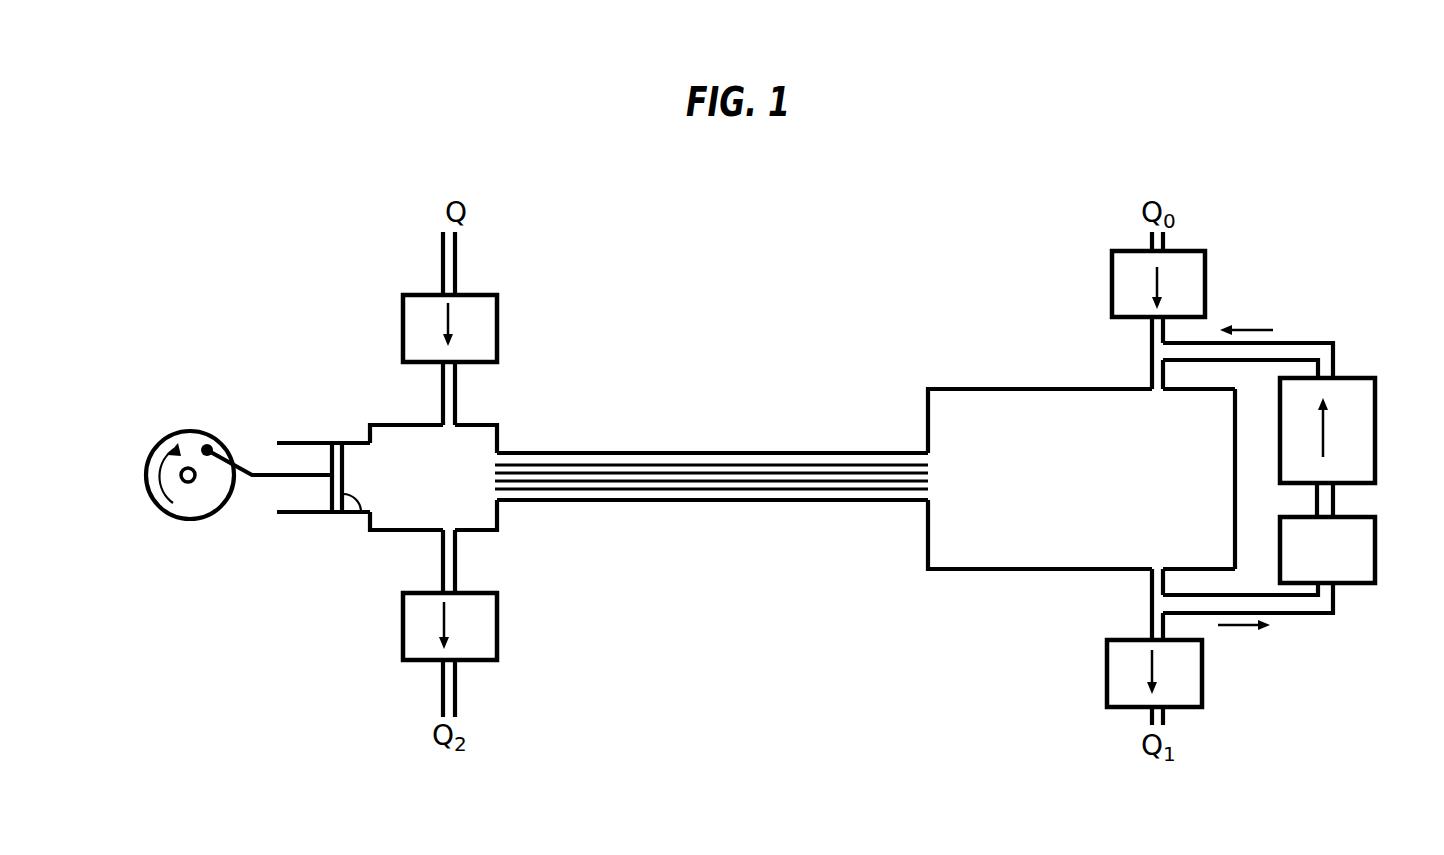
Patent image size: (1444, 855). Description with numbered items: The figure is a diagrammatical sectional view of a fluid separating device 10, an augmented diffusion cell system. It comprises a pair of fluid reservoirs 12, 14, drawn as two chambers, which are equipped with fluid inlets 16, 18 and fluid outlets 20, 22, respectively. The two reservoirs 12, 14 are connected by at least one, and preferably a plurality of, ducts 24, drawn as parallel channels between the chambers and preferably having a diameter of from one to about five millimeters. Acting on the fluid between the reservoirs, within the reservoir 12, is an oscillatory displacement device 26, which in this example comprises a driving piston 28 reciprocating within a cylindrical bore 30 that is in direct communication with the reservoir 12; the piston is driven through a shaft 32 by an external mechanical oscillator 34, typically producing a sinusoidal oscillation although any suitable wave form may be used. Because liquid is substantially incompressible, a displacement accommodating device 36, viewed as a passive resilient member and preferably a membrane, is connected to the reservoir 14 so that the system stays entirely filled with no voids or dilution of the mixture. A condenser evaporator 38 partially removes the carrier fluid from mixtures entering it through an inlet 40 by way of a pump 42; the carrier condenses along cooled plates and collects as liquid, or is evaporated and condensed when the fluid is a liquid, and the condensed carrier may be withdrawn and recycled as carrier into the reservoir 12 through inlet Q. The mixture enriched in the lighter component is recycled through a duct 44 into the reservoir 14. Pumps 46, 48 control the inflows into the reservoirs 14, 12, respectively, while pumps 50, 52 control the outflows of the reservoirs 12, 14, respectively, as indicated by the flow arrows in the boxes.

The fluid separating device 10 is at (796, 274).
The fluid reservoir 12 is at (467, 450).
The fluid reservoir 14 is at (972, 552).
The fluid inlet 16 is at (438, 396).
The fluid inlet 18 is at (1147, 363).
The fluid outlet 20 is at (455, 572).
The fluid outlet 22 is at (1147, 617).
The duct 24 is at (815, 480).
The oscillatory displacement device 26 is at (262, 418).
The driving piston 28 is at (360, 513).
The cylindrical bore 30 is at (293, 443).
The shaft 32 is at (247, 477).
The external mechanical oscillator 34 is at (147, 467).
The displacement accommodating device 36 is at (1237, 499).
The condenser evaporator 38 is at (1353, 432).
The inlet 40 is at (1230, 590).
The pump 42 is at (1358, 567).
The duct 44 is at (1323, 343).
The pump 46 is at (1128, 277).
The pump 48 is at (497, 330).
The pump 50 is at (478, 613).
The pump 52 is at (1122, 667).